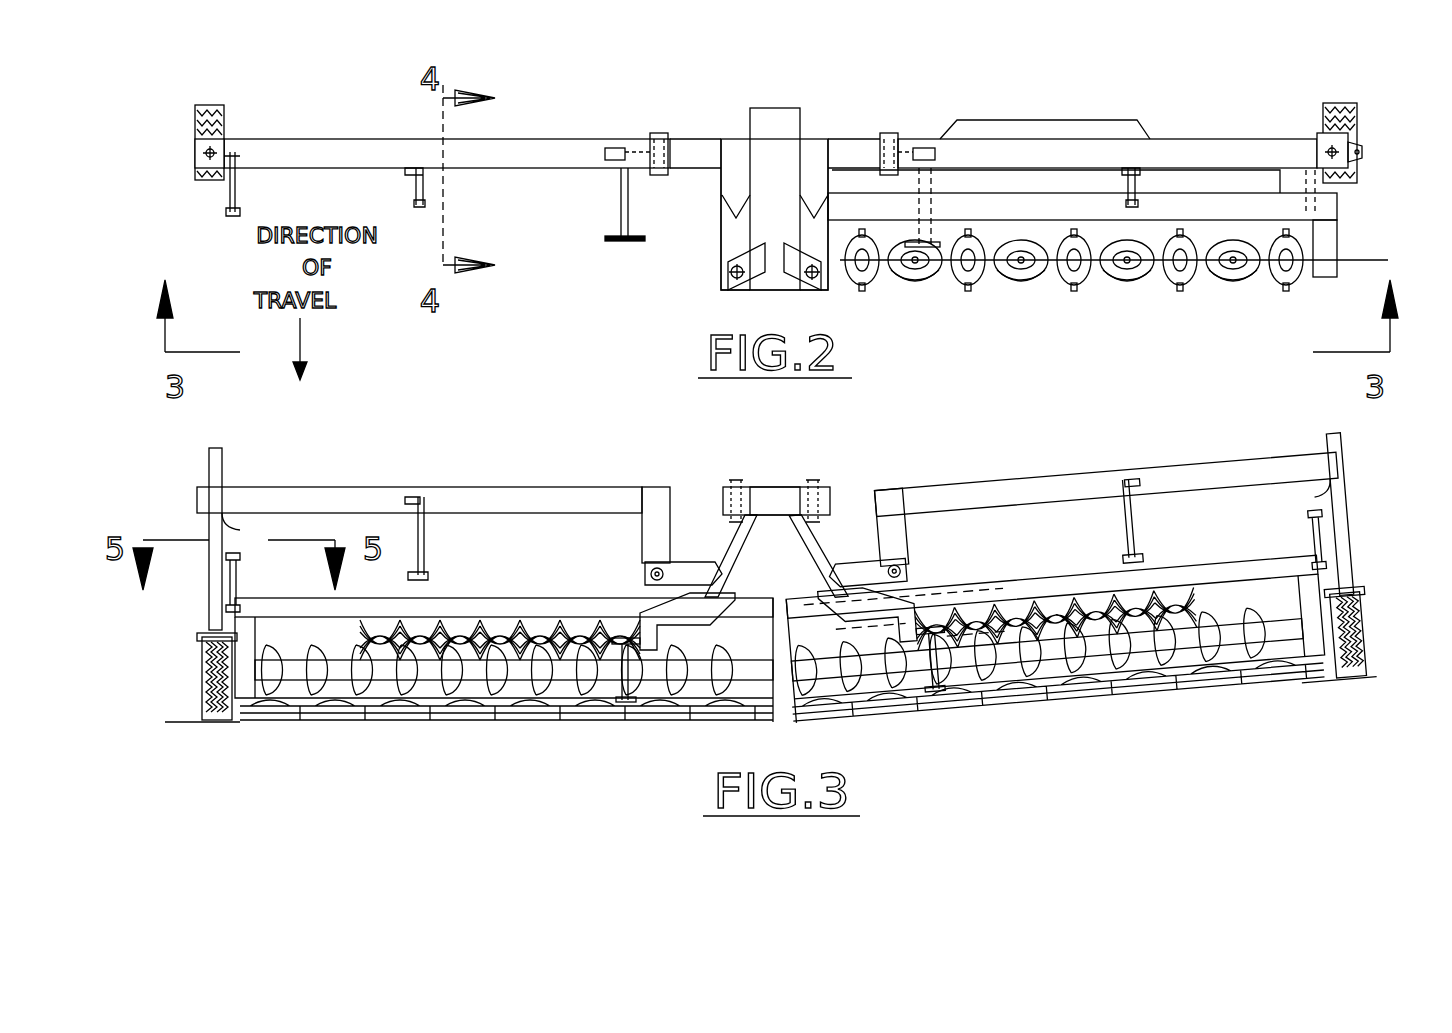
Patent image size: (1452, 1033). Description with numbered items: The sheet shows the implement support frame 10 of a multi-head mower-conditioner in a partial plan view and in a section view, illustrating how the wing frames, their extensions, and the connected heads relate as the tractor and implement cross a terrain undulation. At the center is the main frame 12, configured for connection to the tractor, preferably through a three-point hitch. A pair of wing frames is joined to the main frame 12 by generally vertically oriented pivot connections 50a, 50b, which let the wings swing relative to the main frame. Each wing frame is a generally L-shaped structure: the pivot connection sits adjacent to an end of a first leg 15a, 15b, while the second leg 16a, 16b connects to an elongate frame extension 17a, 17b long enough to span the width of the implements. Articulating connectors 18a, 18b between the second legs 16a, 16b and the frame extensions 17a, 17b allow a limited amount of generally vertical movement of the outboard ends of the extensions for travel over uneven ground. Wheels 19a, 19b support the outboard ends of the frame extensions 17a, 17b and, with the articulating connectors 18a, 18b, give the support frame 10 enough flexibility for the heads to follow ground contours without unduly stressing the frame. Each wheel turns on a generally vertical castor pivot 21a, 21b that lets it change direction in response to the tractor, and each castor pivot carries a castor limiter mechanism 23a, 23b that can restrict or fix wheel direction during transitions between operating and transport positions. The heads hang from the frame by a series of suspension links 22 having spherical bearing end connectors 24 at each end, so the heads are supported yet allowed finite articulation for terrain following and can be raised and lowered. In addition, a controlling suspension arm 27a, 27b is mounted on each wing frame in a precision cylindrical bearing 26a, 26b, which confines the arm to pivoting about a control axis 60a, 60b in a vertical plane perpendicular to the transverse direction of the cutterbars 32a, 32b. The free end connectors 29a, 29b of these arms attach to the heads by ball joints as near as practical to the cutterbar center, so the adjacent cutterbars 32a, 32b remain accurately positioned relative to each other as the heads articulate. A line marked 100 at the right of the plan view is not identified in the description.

In FIG. 2, the support frame 10 is at (768, 108).
In FIG. 2, the main frame 12 is at (783, 125).
In FIG. 3, the main frame 12 is at (778, 525).
In FIG. 2, the first leg 15a is at (830, 236).
In FIG. 3, the first leg 15a is at (870, 555).
In FIG. 2, the first leg 15b is at (734, 228).
In FIG. 3, the first leg 15b is at (713, 550).
In FIG. 2, the second leg 16a is at (857, 148).
In FIG. 3, the second leg 16a is at (960, 480).
In FIG. 2, the second leg 16b is at (685, 150).
In FIG. 3, the second leg 16b is at (662, 525).
In FIG. 2, the frame extension 17a is at (1215, 148).
In FIG. 3, the frame extension 17a is at (1030, 482).
In FIG. 2, the frame extension 17b is at (397, 150).
In FIG. 3, the frame extension 17b is at (475, 505).
In FIG. 3, the articulating connector 18a is at (880, 578).
In FIG. 3, the articulating connector 18b is at (645, 575).
In FIG. 2, the wheel 19a is at (1330, 115).
In FIG. 3, the wheel 19a is at (1350, 675).
In FIG. 2, the wheel 19b is at (215, 115).
In FIG. 3, the wheel 19b is at (200, 690).
In FIG. 2, the castor pivot 21a is at (1316, 152).
In FIG. 3, the castor pivot 21a is at (1333, 440).
In FIG. 2, the castor pivot 21b is at (205, 155).
In FIG. 3, the castor pivot 21b is at (209, 490).
In FIG. 2, the suspension link 22 is at (232, 185).
In FIG. 3, the suspension link 22 is at (420, 528).
In FIG. 3, the castor limiter mechanism 23a is at (1362, 589).
In FIG. 3, the castor limiter mechanism 23b is at (196, 622).
In FIG. 3, the spherical bearing end connector 24 is at (425, 498).
In FIG. 2, the precision cylindrical bearing 26a is at (930, 160).
In FIG. 3, the precision cylindrical bearing 26a is at (1003, 700).
In FIG. 2, the precision cylindrical bearing 26b is at (618, 160).
In FIG. 3, the precision cylindrical bearing 26b is at (640, 600).
In FIG. 2, the controlling suspension arm 27a is at (948, 207).
In FIG. 2, the controlling suspension arm 27b is at (602, 262).
In FIG. 3, the controlling suspension arm 27b is at (618, 602).
In FIG. 2, the free end connector 29a is at (972, 280).
In FIG. 2, the free end connector 29b is at (598, 240).
In FIG. 3, the cutterbar 32a is at (1065, 722).
In FIG. 3, the cutterbar 32b is at (497, 735).
In FIG. 2, the pivot connection 50a is at (818, 283).
In FIG. 3, the pivot connection 50a is at (828, 530).
In FIG. 2, the pivot connection 50b is at (725, 283).
In FIG. 3, the pivot connection 50b is at (737, 480).
In FIG. 2, the control axis 60a is at (950, 150).
In FIG. 3, the control axis 60a is at (872, 705).
In FIG. 2, the control axis 60b is at (613, 152).
In FIG. 3, the control axis 60b is at (668, 690).
In FIG. 2, the ground surface 100 is at (1358, 260).